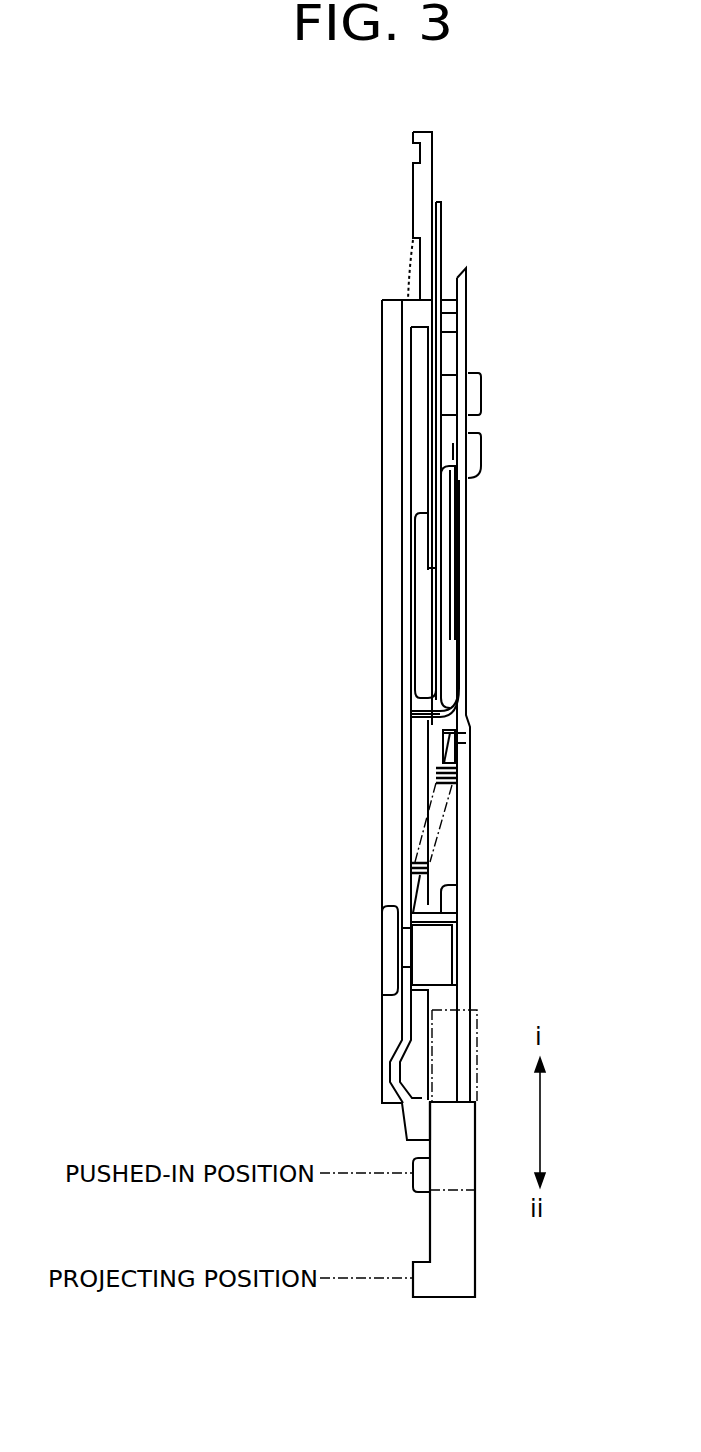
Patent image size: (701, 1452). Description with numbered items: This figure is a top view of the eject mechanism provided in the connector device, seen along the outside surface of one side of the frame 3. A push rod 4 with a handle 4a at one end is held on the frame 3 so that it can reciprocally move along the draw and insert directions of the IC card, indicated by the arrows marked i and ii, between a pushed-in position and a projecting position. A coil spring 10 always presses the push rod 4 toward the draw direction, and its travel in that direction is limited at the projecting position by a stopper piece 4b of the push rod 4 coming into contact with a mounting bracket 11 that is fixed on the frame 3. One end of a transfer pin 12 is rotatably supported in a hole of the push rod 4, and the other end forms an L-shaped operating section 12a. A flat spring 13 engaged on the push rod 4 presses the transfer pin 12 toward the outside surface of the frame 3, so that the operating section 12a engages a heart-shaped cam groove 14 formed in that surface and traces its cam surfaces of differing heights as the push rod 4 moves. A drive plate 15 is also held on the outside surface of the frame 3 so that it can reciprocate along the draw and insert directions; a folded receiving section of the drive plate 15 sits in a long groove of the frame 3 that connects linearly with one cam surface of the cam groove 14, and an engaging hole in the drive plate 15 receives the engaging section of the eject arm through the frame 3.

The frame 3 is at (387, 378).
The push rod 4 is at (468, 685).
The handle 4a is at (460, 1283).
The stopper piece 4b is at (447, 902).
The coil spring 10 is at (438, 812).
The mounting bracket 11 is at (445, 967).
The transfer pin 12 is at (450, 607).
The operating section 12a is at (400, 718).
The flat spring 13 is at (460, 642).
The cam groove 14 is at (418, 763).
The drive plate 15 is at (437, 218).